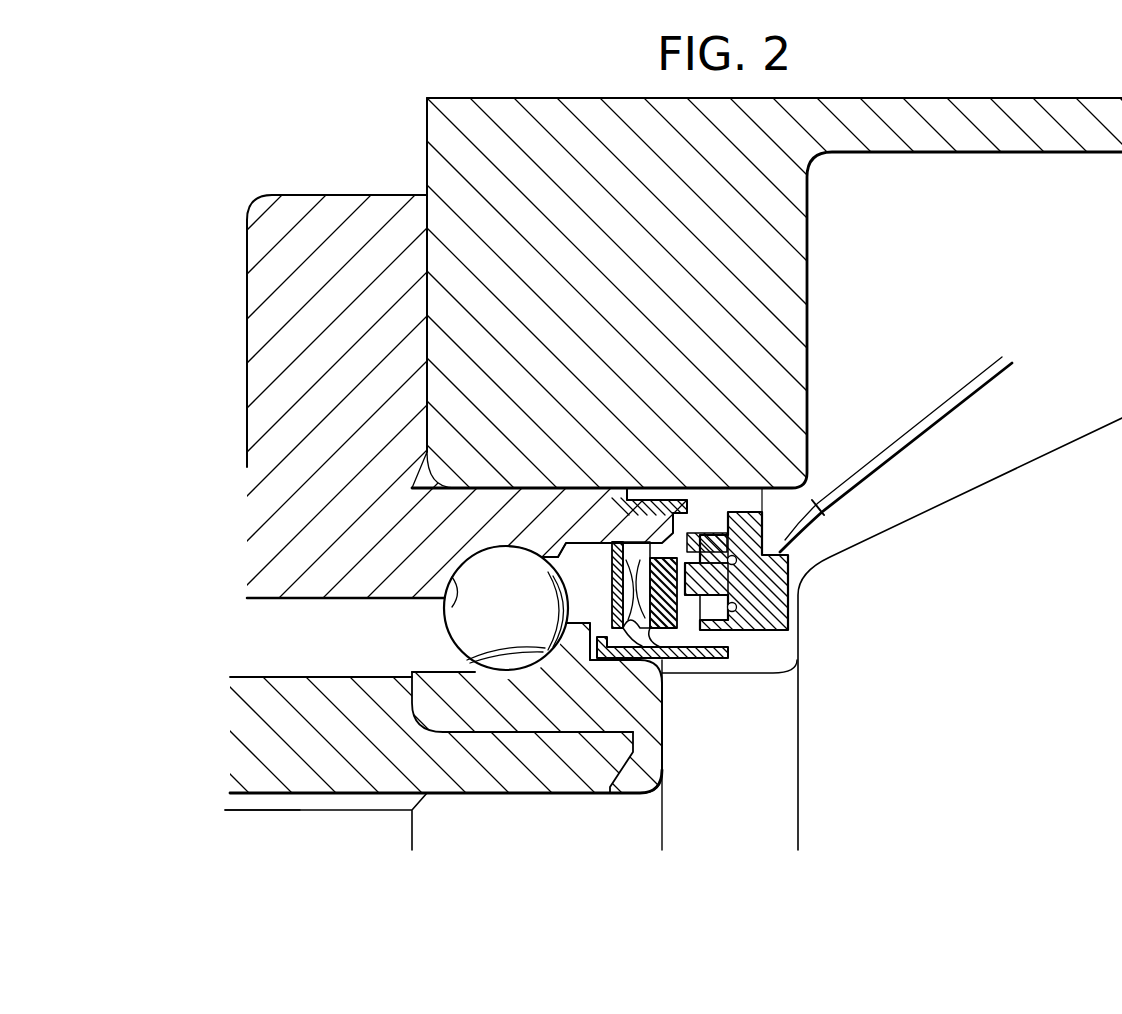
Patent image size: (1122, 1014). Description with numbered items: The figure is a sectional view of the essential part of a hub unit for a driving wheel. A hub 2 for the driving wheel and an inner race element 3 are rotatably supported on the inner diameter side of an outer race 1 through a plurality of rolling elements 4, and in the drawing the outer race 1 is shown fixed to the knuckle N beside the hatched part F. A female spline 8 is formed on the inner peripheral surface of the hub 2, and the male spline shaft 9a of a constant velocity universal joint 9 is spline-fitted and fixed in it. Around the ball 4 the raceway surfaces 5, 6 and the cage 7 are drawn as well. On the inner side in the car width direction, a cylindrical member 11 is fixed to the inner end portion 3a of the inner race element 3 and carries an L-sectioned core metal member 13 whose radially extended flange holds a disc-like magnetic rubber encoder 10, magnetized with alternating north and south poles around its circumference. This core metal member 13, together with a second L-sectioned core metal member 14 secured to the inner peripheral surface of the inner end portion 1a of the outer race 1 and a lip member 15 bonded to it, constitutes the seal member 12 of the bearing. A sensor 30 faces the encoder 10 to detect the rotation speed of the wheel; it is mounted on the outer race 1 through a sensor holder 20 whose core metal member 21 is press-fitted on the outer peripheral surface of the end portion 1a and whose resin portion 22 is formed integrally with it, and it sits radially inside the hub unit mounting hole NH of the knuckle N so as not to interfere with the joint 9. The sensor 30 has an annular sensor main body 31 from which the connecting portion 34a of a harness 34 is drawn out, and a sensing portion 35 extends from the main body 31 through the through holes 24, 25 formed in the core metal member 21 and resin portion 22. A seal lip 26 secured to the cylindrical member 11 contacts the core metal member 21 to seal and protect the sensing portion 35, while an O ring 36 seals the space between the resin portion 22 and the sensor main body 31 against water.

The fixed housing F is at (263, 347).
The knuckle N is at (812, 290).
The outer race 1 is at (287, 537).
The inner end portion of the outer race 1a is at (600, 500).
The hub for a driving wheel 2 is at (287, 739).
The inner race element 3 is at (462, 738).
The inner end portion of the inner race element 3a is at (640, 732).
The rolling elements 4 is at (463, 620).
The outer raceway 5 is at (447, 600).
The inner raceway shoulder 6 is at (548, 722).
The cage 7 is at (467, 657).
The female spline 8 is at (283, 808).
The constant velocity universal joint 9 is at (1074, 430).
The male spline shaft 9a is at (355, 785).
The magnetic rubber encoder 10 is at (673, 663).
The cylindrical member 11 is at (728, 652).
The seal member 12 is at (596, 578).
The core metal member 13 is at (660, 670).
The core metal member 14 is at (560, 500).
The lip member 15 is at (525, 497).
The sensor holder 20 is at (646, 556).
The core metal member 21 is at (623, 545).
The resin portion 22 is at (690, 545).
The through hole 24 is at (790, 555).
The through hole 25 is at (754, 539).
The seal lip 26 is at (687, 650).
The sensor 30 is at (819, 588).
The sensor main body 31 is at (737, 562).
The harness 34 is at (940, 415).
The connecting portion 34a is at (820, 503).
The sensing portion 35 is at (737, 608).
The O ring 36 is at (727, 517).
The hub unit mounting hole NH is at (780, 500).